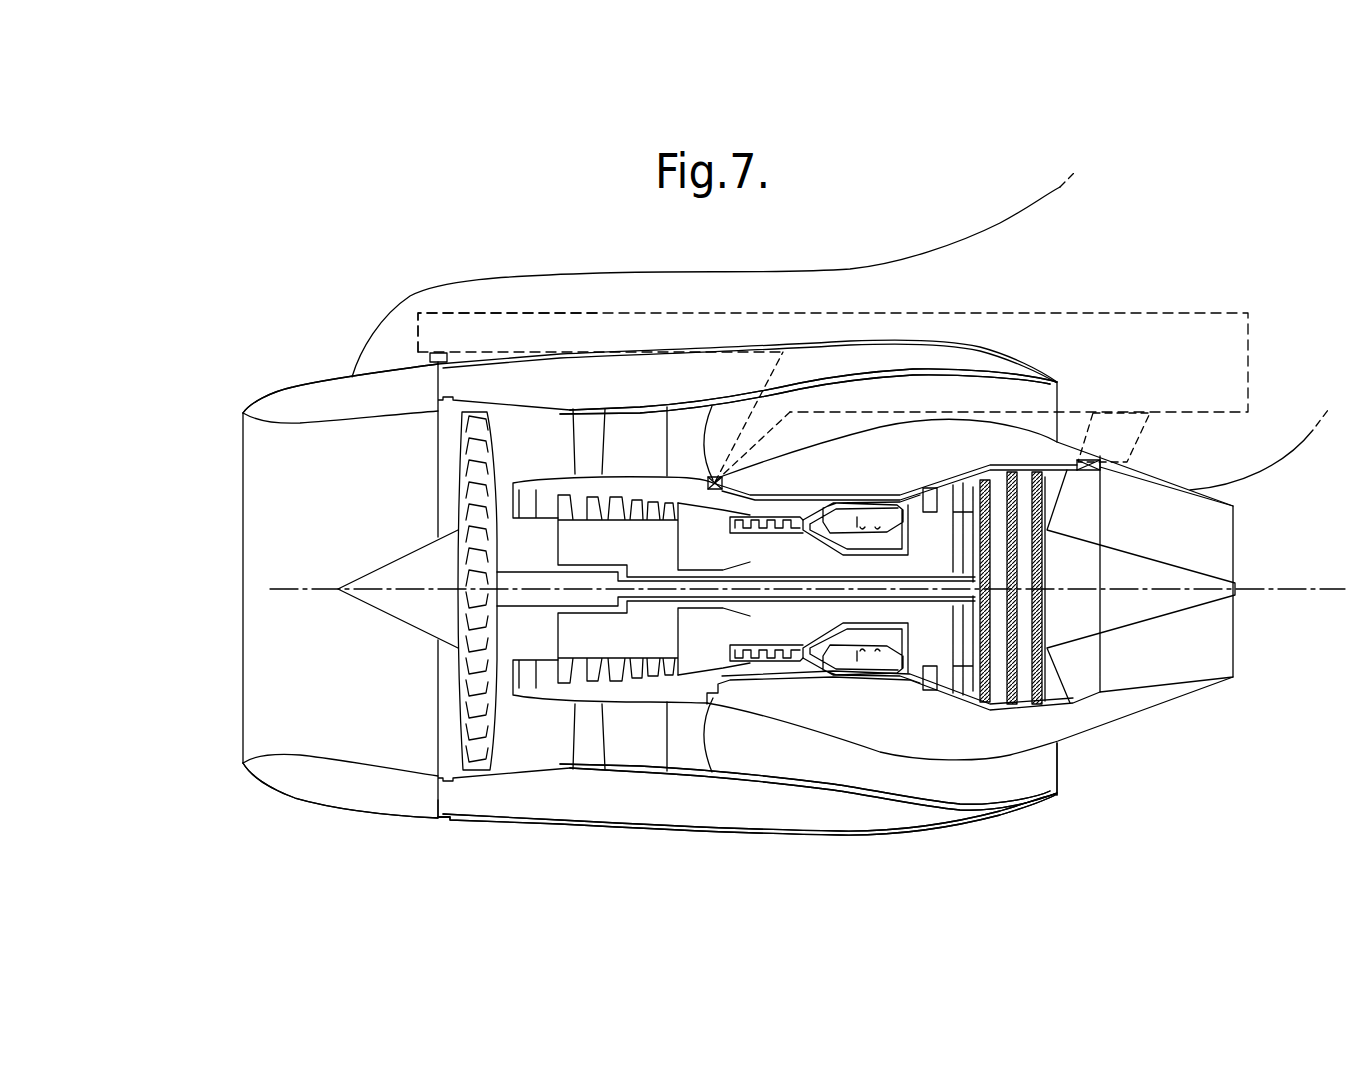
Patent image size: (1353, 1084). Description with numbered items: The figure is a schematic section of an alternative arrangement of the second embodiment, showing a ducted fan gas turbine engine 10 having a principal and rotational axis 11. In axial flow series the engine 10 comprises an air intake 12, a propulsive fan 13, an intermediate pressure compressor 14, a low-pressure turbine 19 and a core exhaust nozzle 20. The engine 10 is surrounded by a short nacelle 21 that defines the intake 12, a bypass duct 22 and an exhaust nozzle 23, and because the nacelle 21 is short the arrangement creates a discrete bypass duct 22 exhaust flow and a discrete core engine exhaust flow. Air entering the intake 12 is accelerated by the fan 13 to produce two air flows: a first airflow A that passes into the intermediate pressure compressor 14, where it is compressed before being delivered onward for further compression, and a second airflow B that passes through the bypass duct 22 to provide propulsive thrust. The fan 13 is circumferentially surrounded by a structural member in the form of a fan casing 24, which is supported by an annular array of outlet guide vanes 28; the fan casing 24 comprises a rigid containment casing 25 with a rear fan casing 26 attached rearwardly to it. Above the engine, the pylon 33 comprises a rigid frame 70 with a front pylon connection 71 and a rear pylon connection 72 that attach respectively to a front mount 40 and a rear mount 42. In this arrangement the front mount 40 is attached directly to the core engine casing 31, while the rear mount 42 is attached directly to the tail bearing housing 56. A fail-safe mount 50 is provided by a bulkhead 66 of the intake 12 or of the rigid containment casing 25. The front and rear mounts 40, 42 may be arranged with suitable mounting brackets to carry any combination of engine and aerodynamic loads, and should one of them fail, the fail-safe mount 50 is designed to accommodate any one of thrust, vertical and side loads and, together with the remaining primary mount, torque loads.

The ducted fan gas turbine engine 10 is at (158, 331).
The principal and rotational axis 11 is at (285, 589).
The air intake 12 is at (288, 752).
The propulsive fan 13 is at (460, 697).
The intermediate pressure compressor 14 is at (602, 647).
The low-pressure turbine 19 is at (1010, 700).
The core exhaust nozzle 20 is at (1223, 677).
The nacelle 21 is at (280, 385).
The bypass duct 22 is at (733, 747).
The exhaust nozzle 23 is at (1040, 805).
The fan casing 24 is at (547, 403).
The rigid containment casing 25 is at (472, 400).
The rear fan casing 26 is at (613, 406).
The outlet guide vanes 28 is at (588, 440).
The core engine casing 31 is at (903, 427).
The pylon 33 is at (973, 260).
The front mount 40 is at (727, 486).
The rear mount 42 is at (1100, 456).
The fail-safe mount 50 is at (408, 331).
The tail bearing housing 56 is at (1083, 505).
The bulkhead 66 is at (437, 796).
The rigid frame 70 is at (1150, 307).
The front pylon connection 71 is at (737, 427).
The rear pylon connection 72 is at (1143, 437).
The first airflow A is at (543, 504).
The second airflow B is at (537, 447).